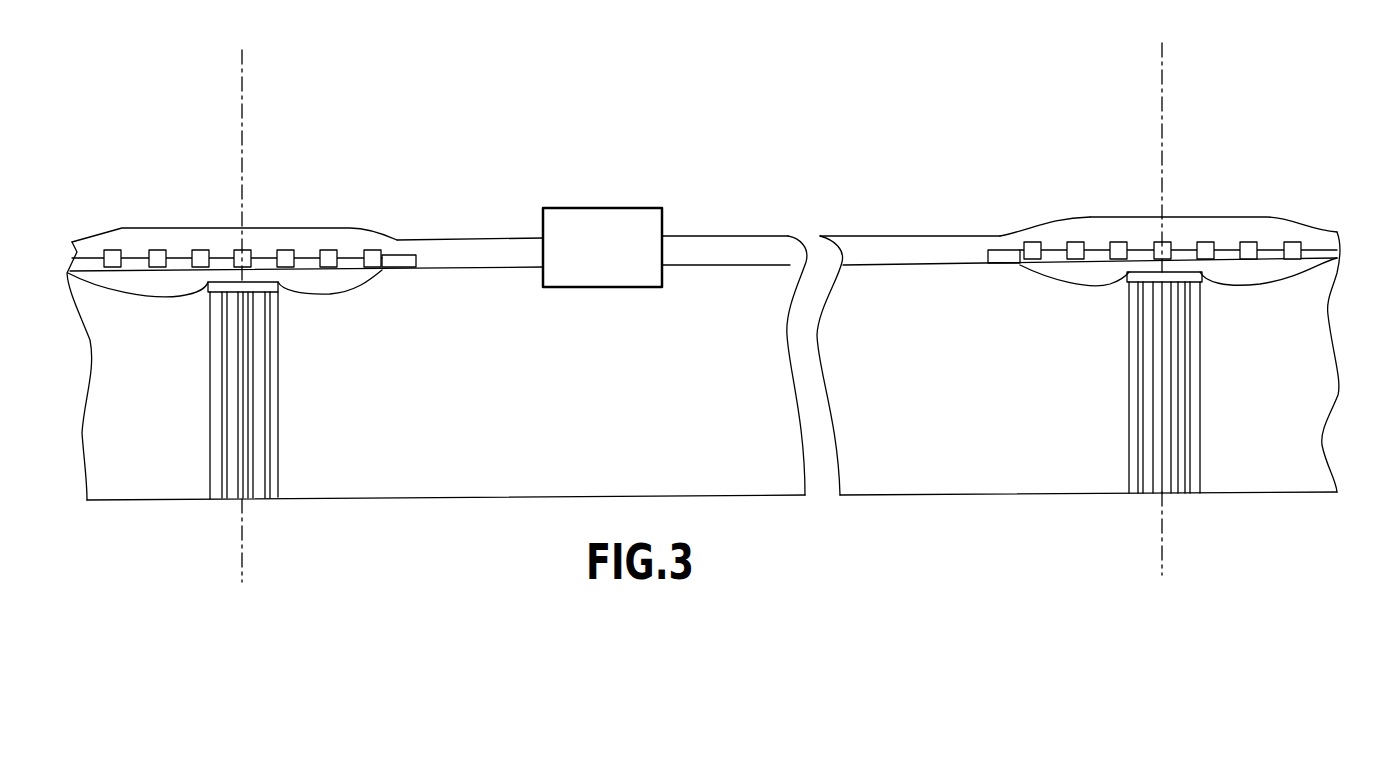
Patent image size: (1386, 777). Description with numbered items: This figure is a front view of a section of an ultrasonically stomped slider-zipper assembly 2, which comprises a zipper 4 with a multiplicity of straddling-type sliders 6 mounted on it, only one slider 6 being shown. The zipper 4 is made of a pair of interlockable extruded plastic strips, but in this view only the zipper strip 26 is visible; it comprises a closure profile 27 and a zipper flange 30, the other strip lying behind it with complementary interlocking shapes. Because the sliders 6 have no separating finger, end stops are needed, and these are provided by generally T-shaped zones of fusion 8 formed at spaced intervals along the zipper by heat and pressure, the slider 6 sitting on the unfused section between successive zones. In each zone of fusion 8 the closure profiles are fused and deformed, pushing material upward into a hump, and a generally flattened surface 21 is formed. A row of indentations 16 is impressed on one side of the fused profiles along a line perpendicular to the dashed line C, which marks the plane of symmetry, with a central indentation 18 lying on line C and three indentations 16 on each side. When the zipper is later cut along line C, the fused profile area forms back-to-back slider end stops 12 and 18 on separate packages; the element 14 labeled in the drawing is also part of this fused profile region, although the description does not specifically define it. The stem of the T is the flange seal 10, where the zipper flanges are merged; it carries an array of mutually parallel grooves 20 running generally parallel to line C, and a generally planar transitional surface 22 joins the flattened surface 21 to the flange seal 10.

The slider-zipper assembly 2 is at (1199, 127).
The zipper 4 is at (466, 230).
The slider 6 is at (627, 208).
The zone of fusion 8 is at (183, 147).
The flange seal 10 is at (296, 384).
The slider end stop 12 is at (186, 227).
The top layer 14 is at (315, 227).
The indentation 16 is at (157, 268).
The central indentation 18 is at (255, 258).
The grooves 20 is at (233, 452).
The flattened surface 21 is at (220, 240).
The transitional surface 22 is at (215, 286).
The zipper strip 26 is at (928, 233).
The closure profile 27 is at (693, 250).
The zipper flange 30 is at (1300, 420).
The plane of symmetry line C is at (243, 130).